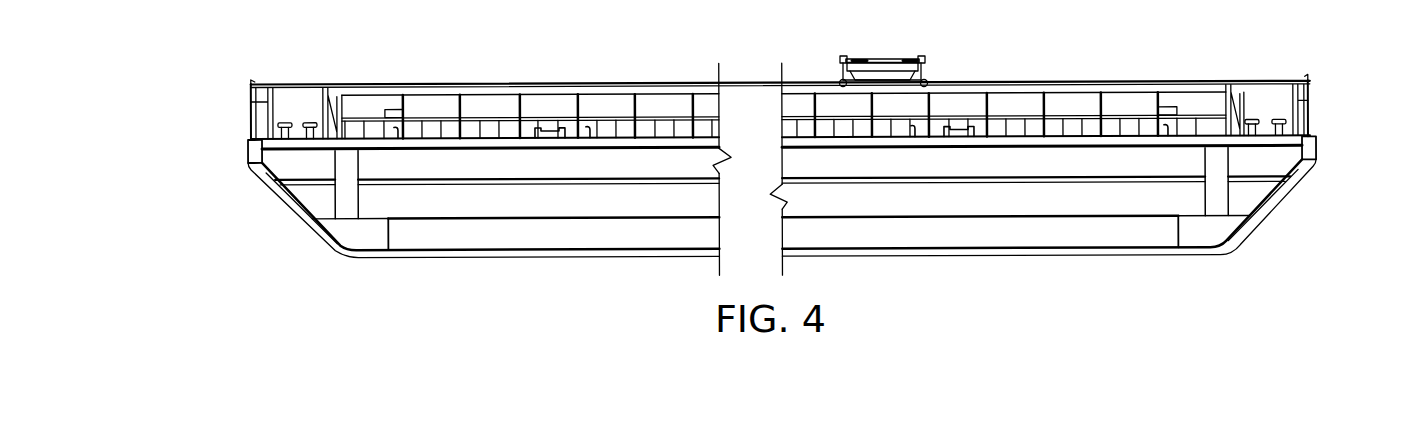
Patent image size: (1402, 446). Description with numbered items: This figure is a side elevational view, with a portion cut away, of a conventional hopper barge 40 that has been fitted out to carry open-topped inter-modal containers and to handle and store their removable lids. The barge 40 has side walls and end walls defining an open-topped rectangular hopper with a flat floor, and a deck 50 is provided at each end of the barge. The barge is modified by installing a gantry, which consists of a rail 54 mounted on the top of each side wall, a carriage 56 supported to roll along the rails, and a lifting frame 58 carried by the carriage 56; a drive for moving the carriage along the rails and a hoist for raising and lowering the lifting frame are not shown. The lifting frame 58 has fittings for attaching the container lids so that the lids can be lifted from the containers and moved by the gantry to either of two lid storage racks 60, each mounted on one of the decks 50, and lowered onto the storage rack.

The hopper barge 40 is at (1331, 147).
The deck 50 is at (298, 133).
The rail 54 is at (1060, 82).
The carriage 56 is at (840, 75).
The lifting frame 58 is at (880, 72).
The lid storage rack 60 is at (267, 117).